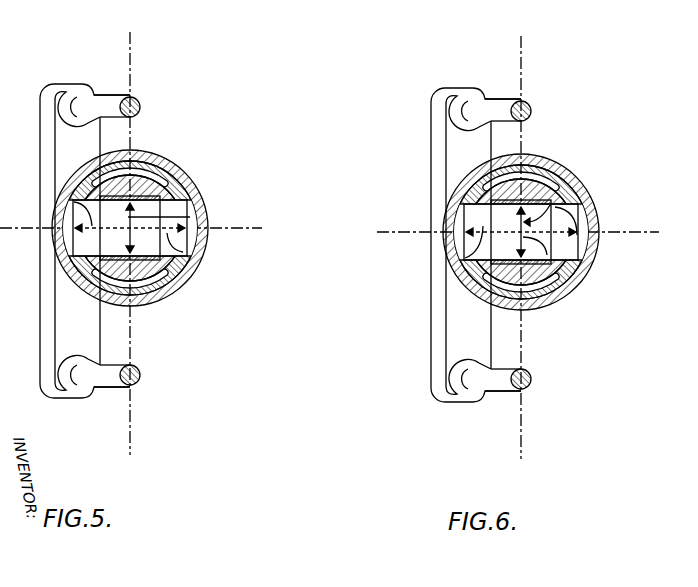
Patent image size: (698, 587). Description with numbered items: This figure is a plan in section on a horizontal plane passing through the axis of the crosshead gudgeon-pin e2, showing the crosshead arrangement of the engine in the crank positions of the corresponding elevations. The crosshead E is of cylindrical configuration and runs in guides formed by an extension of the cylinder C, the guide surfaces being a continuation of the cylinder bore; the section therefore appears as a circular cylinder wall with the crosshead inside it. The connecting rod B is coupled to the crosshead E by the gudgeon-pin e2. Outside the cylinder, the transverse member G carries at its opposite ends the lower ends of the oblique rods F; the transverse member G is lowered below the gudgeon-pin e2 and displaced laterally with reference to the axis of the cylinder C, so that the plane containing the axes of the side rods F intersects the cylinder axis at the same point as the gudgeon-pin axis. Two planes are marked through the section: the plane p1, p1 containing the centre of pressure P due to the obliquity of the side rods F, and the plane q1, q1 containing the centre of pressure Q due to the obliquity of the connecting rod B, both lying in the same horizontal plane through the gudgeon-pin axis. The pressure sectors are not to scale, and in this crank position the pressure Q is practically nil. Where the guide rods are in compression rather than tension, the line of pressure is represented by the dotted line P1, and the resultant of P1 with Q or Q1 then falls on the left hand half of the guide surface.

In FIG. 5, the oblique rods F is at (143, 103).
In FIG. 6, the oblique rods F is at (533, 105).
In FIG. 5, the transverse member G is at (67, 144).
In FIG. 6, the transverse member G is at (450, 362).
In FIG. 5, the connecting rod B is at (143, 187).
In FIG. 6, the connecting rod B is at (511, 288).
In FIG. 5, the crosshead E is at (192, 193).
In FIG. 6, the crosshead E is at (586, 265).
In FIG. 5, the cylinder C is at (168, 292).
In FIG. 6, the cylinder C is at (598, 222).
In FIG. 5, the centre of pressure due to obliquity of side rods P is at (196, 264).
In FIG. 6, the centre of pressure due to obliquity of side rods P is at (588, 200).
In FIG. 5, the line of pressure with guide rods in compression P1 is at (71, 199).
In FIG. 6, the line of pressure with guide rods in compression P1 is at (451, 263).
In FIG. 5, the centre of pressure due to obliquity of connecting rod Q is at (130, 236).
In FIG. 6, the centre of pressure due to obliquity of connecting rod Q is at (567, 292).
In FIG. 5, the alternative centre of pressure due to connecting rod Q1 is at (190, 217).
In FIG. 6, the alternative centre of pressure due to connecting rod Q1 is at (552, 203).
In FIG. 5, the crosshead gudgeon-pin e2 is at (83, 243).
In FIG. 6, the crosshead gudgeon-pin e2 is at (473, 218).
In FIG. 5, the plane of centre of pressure P p1 is at (143, 225).
In FIG. 6, the plane of centre of pressure P p1 is at (512, 238).
In FIG. 5, the plane of centre of pressure Q q1 is at (135, 43).
In FIG. 6, the plane of centre of pressure Q q1 is at (525, 43).